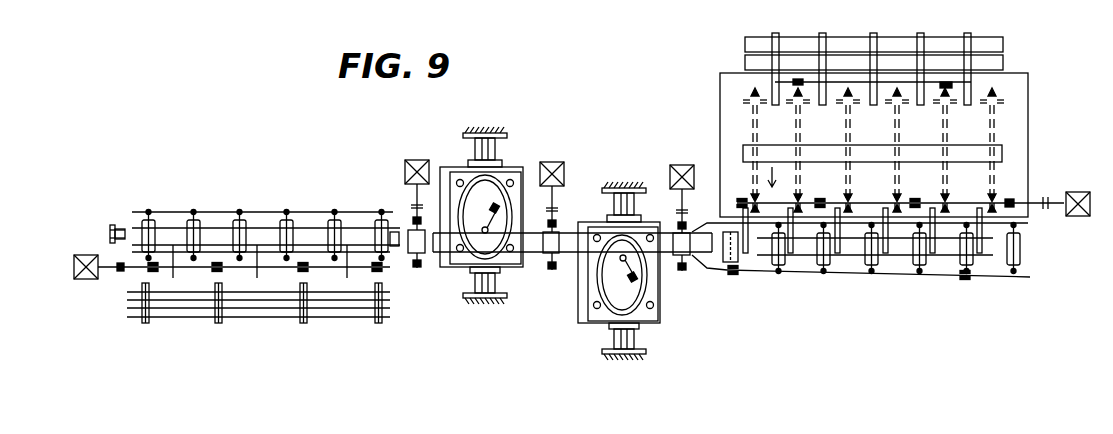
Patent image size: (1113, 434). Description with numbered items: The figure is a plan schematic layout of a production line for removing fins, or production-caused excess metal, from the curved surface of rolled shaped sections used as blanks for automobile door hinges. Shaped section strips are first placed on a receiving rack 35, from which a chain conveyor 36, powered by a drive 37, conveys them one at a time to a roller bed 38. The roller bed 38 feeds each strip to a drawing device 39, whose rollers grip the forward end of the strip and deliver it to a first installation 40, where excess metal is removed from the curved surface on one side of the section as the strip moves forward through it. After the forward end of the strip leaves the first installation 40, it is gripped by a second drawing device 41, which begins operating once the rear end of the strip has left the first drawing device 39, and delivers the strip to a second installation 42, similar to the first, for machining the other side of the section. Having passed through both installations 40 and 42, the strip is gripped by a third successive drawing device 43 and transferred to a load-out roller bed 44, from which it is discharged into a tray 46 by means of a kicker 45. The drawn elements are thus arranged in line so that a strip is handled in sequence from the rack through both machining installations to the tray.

The receiving rack 35 is at (978, 43).
The chain conveyor 36 is at (992, 127).
The drive 37 is at (1078, 192).
The roller bed 38 is at (872, 267).
The drawing device 39 is at (685, 256).
The first installation 40 is at (668, 314).
The second drawing device 41 is at (539, 255).
The second installation 42 is at (465, 275).
The third drawing device 43 is at (415, 255).
The load-out roller bed 44 is at (310, 223).
The kicker 45 is at (180, 245).
The tray 46 is at (217, 323).